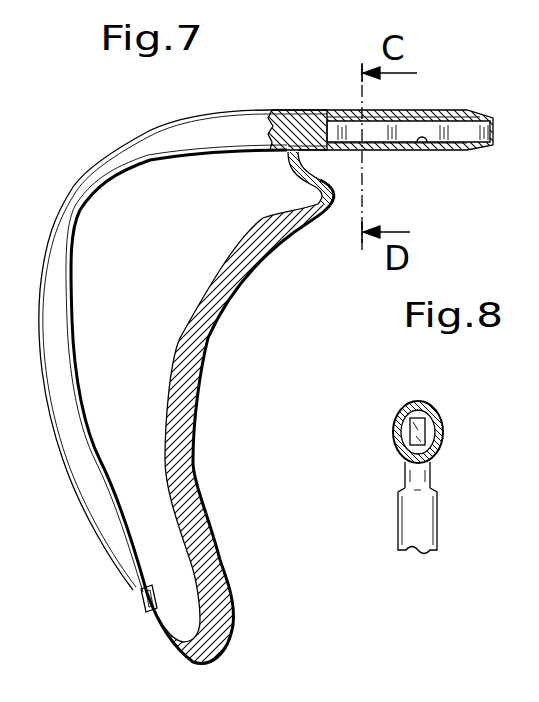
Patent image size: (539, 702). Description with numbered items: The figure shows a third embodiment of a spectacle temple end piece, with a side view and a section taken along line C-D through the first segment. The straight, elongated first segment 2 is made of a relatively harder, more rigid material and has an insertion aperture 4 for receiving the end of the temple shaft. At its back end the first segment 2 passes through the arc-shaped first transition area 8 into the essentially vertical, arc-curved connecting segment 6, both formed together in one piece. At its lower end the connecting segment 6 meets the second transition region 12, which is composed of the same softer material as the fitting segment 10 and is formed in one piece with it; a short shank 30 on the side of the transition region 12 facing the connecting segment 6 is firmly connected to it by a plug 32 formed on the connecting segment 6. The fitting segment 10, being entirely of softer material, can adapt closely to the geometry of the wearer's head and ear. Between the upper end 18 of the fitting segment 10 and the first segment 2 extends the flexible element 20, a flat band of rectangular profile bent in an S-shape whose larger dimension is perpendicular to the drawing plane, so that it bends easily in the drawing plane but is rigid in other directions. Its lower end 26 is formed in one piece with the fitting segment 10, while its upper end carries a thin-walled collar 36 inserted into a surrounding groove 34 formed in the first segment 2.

In FIG. 7, the first segment 2 is at (240, 108).
In FIG. 8, the first segment 2 is at (413, 393).
In FIG. 7, the insertion aperture 4 is at (453, 130).
In FIG. 8, the insertion aperture 4 is at (436, 410).
In FIG. 7, the connecting segment 6 is at (40, 374).
In FIG. 7, the first transition area 8 is at (107, 165).
In FIG. 7, the fitting segment 10 is at (207, 370).
In FIG. 7, the second transition region 12 is at (230, 648).
In FIG. 7, the upper end 18 is at (260, 233).
In FIG. 8, the upper end 18 is at (400, 538).
In FIG. 7, the flexible element 20 is at (283, 179).
In FIG. 8, the flexible element 20 is at (398, 465).
In FIG. 7, the second end 26 is at (313, 215).
In FIG. 7, the shank 30 is at (168, 633).
In FIG. 7, the plug 32 is at (133, 600).
In FIG. 7, the surrounding groove 34 is at (423, 142).
In FIG. 7, the thin-walled collar 36 is at (427, 110).
In FIG. 8, the thin-walled collar 36 is at (400, 403).